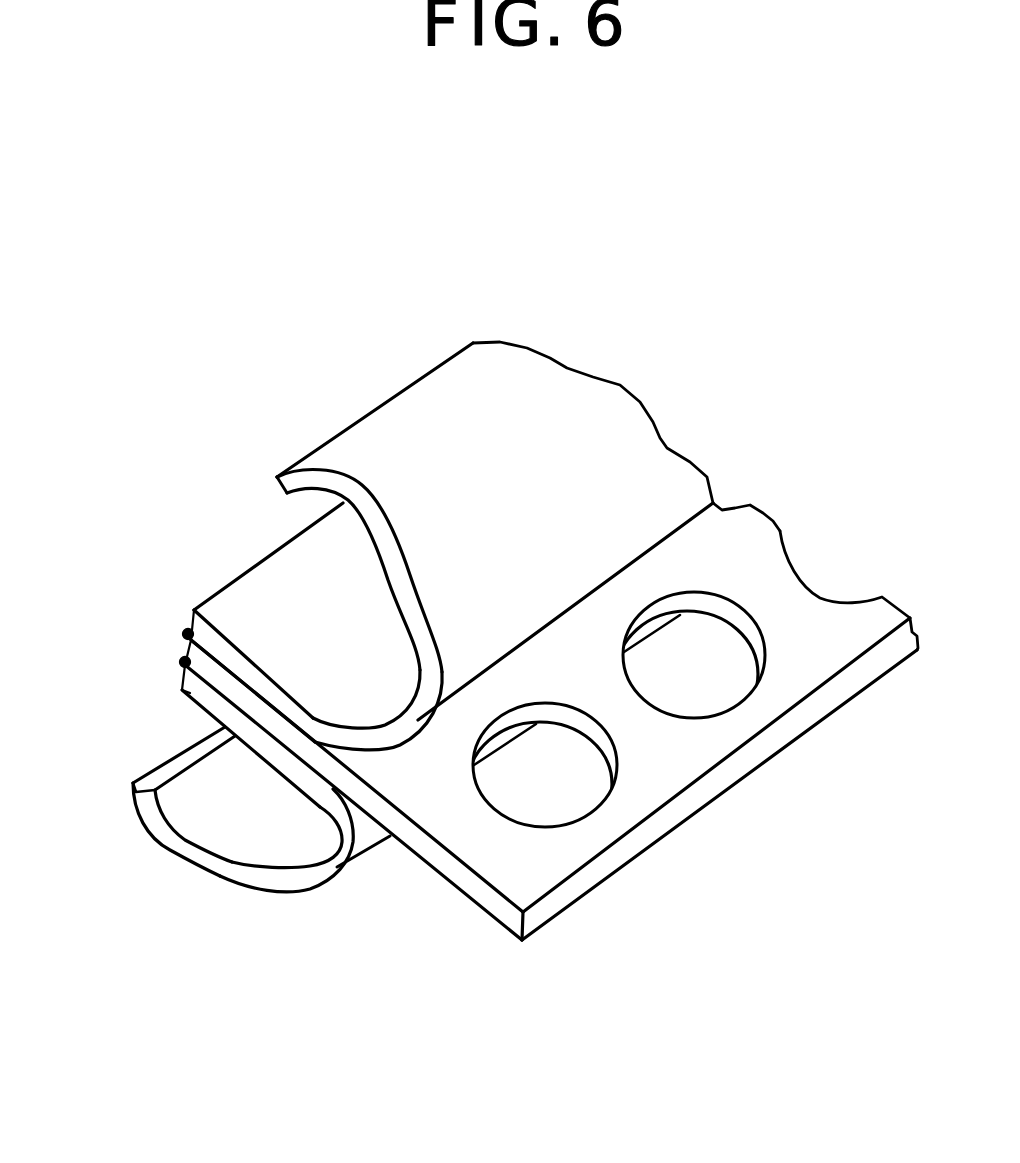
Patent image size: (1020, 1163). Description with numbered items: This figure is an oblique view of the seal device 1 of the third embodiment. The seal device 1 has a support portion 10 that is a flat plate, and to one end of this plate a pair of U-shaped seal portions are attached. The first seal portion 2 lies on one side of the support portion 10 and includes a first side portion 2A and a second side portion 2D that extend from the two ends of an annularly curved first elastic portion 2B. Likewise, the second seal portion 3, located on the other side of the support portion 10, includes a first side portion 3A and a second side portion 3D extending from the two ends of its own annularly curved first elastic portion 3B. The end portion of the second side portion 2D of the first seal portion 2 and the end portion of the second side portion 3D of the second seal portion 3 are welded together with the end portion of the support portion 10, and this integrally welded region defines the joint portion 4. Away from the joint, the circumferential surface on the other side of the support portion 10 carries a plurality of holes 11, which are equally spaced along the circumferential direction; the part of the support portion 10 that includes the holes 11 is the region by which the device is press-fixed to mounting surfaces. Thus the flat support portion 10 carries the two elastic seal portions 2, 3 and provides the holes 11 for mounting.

The seal device 1 is at (743, 328).
The first seal portion 2 is at (525, 445).
The first side portion 2A is at (357, 486).
The first elastic portion 2B is at (405, 722).
The second side portion 2D is at (300, 617).
The second seal portion 3 is at (203, 862).
The first side portion 3A is at (165, 853).
The first elastic portion 3B is at (314, 868).
The second side portion 3D is at (228, 713).
The joint portion 4 is at (185, 662).
The support portion 10 is at (678, 765).
The holes 11 is at (535, 755).